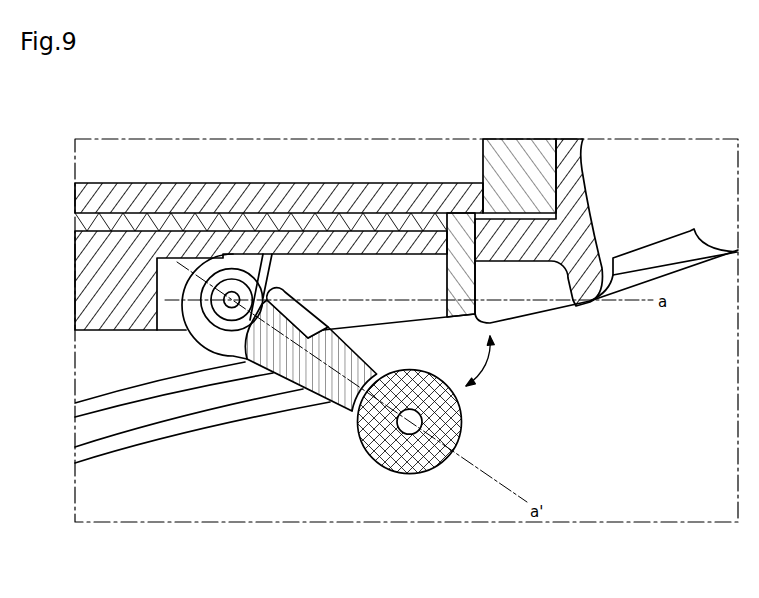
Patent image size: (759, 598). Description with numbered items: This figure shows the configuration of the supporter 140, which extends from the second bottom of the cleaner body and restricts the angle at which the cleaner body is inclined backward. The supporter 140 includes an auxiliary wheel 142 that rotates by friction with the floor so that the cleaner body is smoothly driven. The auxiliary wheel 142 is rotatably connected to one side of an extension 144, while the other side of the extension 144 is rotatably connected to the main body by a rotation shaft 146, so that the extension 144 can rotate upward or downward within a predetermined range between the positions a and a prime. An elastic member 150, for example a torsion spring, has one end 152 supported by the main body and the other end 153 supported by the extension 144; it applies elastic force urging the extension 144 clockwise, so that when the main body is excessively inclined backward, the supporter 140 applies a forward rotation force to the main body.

The supporter 140 is at (242, 337).
The auxiliary wheel 142 is at (397, 457).
The extension 144 is at (330, 384).
The rotation shaft 146 is at (225, 317).
The elastic member 150 is at (278, 271).
The one end of the elastic member 152 is at (256, 266).
The other end of the elastic member 153 is at (287, 330).